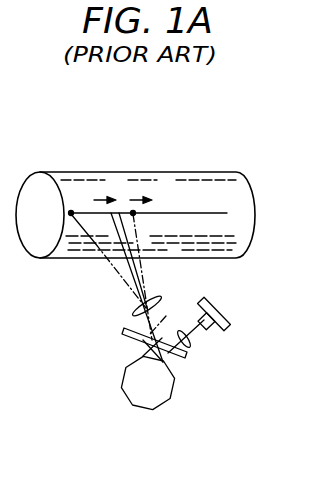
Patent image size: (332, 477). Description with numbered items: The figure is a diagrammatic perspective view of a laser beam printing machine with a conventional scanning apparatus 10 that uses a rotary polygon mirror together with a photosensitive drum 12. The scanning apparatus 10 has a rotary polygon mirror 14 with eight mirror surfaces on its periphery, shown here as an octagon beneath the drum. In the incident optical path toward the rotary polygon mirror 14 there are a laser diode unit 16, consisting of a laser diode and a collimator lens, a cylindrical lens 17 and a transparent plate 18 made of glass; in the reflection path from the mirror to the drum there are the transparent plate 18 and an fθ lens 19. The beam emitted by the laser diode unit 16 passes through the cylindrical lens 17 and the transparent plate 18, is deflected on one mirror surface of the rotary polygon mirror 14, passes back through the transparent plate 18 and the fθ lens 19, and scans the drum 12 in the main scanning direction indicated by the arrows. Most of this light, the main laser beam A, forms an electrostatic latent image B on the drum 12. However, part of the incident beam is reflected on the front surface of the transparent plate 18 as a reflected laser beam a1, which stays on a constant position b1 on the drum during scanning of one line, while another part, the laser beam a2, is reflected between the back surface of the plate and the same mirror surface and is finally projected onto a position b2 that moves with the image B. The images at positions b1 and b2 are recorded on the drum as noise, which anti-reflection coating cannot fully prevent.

The scanning apparatus 10 is at (156, 371).
The photosensitive drum 12 is at (215, 186).
The rotary polygon mirror 14 is at (142, 393).
The laser diode unit 16 is at (229, 331).
The cylindrical lens 17 is at (187, 349).
The transparent plate 18 is at (184, 362).
The fθ lens 19 is at (135, 312).
The main laser beam A is at (143, 308).
The electrostatic latent image B is at (110, 217).
The reflected laser beam a1 is at (152, 326).
The laser beam a2 is at (142, 265).
The constant position b1 is at (65, 257).
The position b2 is at (135, 214).